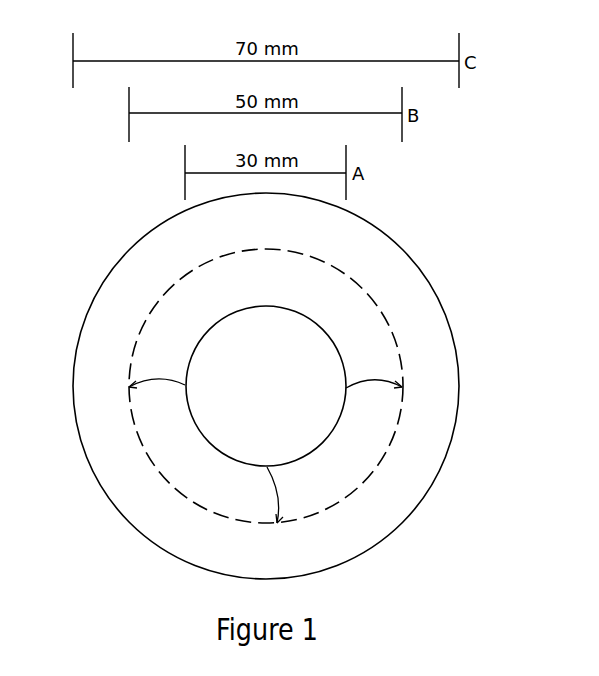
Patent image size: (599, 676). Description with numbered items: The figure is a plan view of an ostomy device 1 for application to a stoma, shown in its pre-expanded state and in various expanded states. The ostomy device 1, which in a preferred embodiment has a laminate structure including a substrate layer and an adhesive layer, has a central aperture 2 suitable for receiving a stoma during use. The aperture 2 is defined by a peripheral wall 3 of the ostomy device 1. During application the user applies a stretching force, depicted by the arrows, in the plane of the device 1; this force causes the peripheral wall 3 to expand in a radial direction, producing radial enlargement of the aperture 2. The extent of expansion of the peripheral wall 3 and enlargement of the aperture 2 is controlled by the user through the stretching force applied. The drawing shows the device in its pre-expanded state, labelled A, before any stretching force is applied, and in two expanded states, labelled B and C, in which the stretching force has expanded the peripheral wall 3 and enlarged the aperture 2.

The ostomy device 1 is at (458, 496).
The aperture 2 is at (210, 353).
The peripheral wall 3 is at (188, 418).